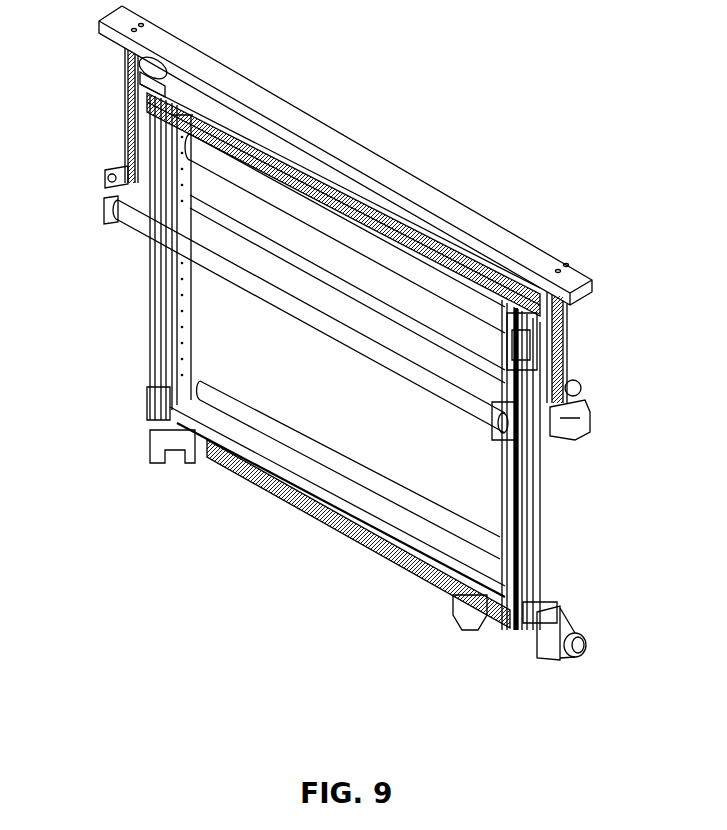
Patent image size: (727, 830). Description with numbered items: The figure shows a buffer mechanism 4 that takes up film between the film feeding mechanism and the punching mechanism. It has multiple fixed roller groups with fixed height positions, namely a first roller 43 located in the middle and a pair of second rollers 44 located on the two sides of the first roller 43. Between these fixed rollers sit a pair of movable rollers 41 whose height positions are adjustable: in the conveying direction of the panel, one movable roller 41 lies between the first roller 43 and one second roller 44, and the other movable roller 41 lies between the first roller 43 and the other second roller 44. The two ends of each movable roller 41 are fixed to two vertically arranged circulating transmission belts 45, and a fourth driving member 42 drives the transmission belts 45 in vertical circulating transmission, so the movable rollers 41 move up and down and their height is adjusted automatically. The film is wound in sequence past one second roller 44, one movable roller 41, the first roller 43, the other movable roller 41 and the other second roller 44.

The buffer mechanism 4 is at (375, 29).
The movable rollers 41 is at (305, 445).
The fourth driving member 42 is at (552, 647).
The first roller 43 is at (312, 265).
The second rollers 44 is at (192, 245).
The circulating transmission belts 45 is at (535, 510).